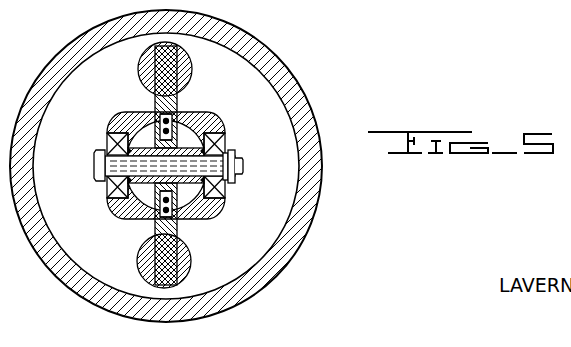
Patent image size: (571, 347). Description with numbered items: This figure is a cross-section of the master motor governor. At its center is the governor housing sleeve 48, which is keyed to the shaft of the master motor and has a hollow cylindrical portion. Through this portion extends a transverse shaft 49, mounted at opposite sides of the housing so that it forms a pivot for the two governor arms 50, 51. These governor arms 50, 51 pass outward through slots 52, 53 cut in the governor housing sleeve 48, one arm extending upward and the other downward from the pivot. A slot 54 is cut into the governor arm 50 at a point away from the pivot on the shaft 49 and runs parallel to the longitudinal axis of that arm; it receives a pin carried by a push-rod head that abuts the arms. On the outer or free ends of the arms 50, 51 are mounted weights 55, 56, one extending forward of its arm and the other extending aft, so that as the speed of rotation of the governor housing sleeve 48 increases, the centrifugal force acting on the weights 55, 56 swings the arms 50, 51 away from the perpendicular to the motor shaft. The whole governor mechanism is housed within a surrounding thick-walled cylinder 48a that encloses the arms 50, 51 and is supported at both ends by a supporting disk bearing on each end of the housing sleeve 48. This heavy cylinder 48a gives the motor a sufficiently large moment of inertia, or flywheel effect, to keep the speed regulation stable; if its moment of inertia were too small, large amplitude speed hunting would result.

The governor housing sleeve 48 is at (207, 121).
The thick-walled cylinder 48a is at (311, 182).
The transverse shaft 49 is at (213, 161).
The governor arm 50 is at (165, 118).
The governor arm 51 is at (153, 228).
The slot 52 is at (177, 107).
The slot 53 is at (178, 229).
The slot 54 is at (123, 113).
The weight 55 is at (190, 65).
The weight 56 is at (190, 266).